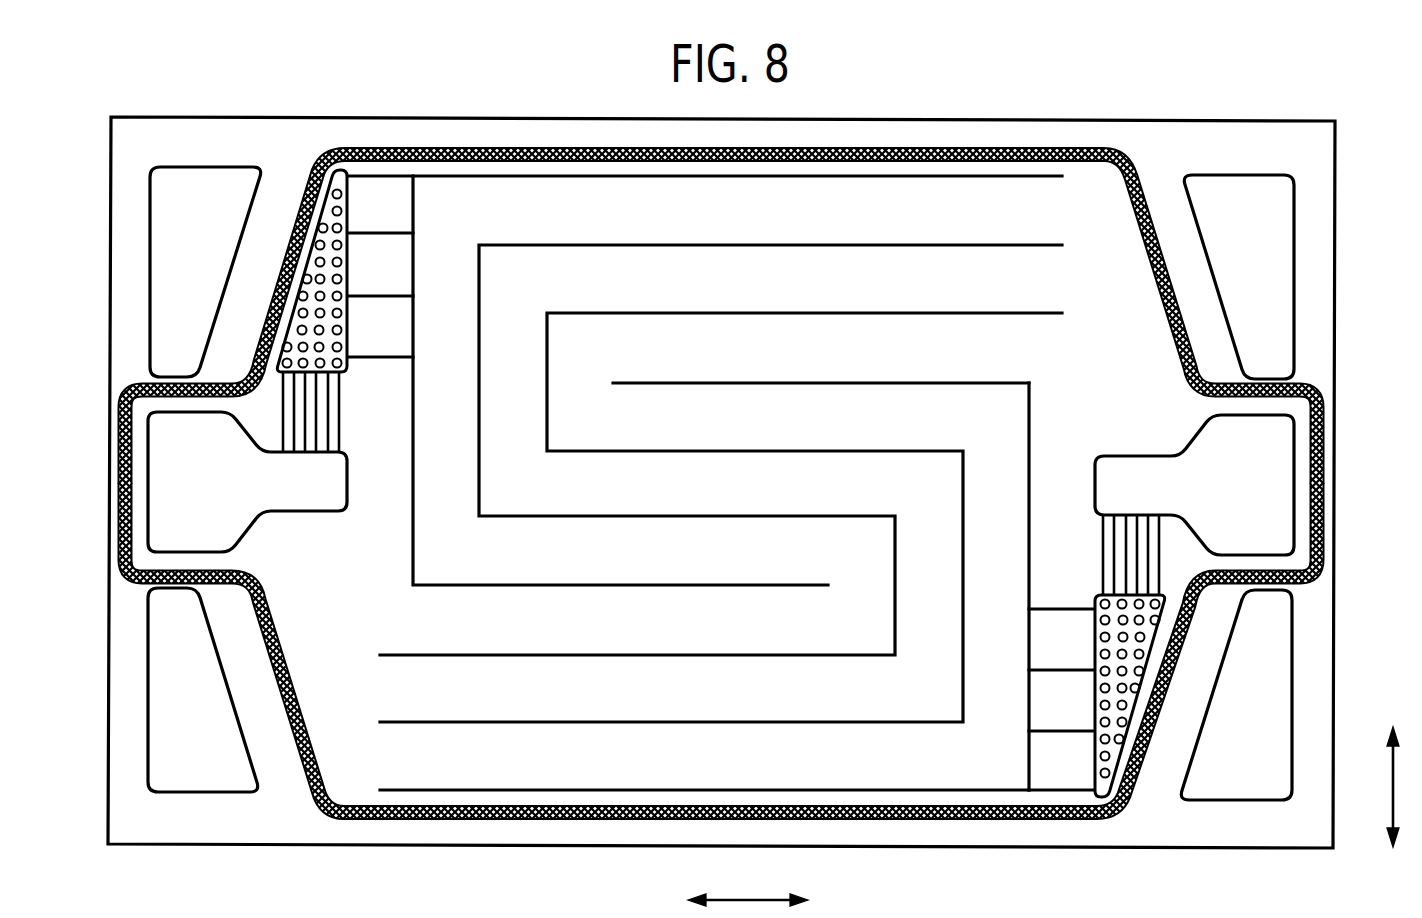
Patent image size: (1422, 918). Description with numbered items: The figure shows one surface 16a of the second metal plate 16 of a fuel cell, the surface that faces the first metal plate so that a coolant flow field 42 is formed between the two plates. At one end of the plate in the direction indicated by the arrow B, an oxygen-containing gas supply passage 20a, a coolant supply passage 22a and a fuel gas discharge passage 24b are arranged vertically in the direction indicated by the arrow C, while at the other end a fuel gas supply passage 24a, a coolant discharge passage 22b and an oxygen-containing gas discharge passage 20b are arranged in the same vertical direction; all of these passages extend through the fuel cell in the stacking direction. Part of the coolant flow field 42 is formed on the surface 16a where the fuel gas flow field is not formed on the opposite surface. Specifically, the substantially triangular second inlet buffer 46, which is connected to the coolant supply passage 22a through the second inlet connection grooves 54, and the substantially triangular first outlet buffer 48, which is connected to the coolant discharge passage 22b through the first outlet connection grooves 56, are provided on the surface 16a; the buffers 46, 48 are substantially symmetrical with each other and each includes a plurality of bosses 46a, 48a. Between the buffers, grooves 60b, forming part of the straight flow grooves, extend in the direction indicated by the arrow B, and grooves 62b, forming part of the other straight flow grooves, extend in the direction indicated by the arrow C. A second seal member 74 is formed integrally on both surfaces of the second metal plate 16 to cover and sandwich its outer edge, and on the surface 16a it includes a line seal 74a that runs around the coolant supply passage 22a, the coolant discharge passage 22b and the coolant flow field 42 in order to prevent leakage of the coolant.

The second metal plate 16 is at (379, 84).
The surface of the second metal plate 16a is at (1134, 827).
The oxygen-containing gas supply passage 20a is at (205, 272).
The oxygen-containing gas discharge passage 20b is at (1236, 695).
The coolant supply passage 22a is at (247, 482).
The coolant discharge passage 22b is at (1194, 485).
The fuel gas supply passage 24a is at (1239, 277).
The fuel gas discharge passage 24b is at (203, 690).
The coolant flow field 42 is at (1040, 166).
The second inlet buffer 46 is at (352, 209).
The bosses 46a is at (349, 314).
The first outlet buffer 48 is at (1093, 746).
The bosses 48a is at (1096, 622).
The second inlet connection grooves 54 is at (341, 411).
The first outlet connection grooves 56 is at (1099, 567).
The grooves 60b is at (607, 787).
The grooves 62b is at (1031, 516).
The second seal member 74 is at (858, 821).
The line seal 74a is at (972, 823).
The arrow B is at (748, 884).
The arrow C is at (1380, 787).